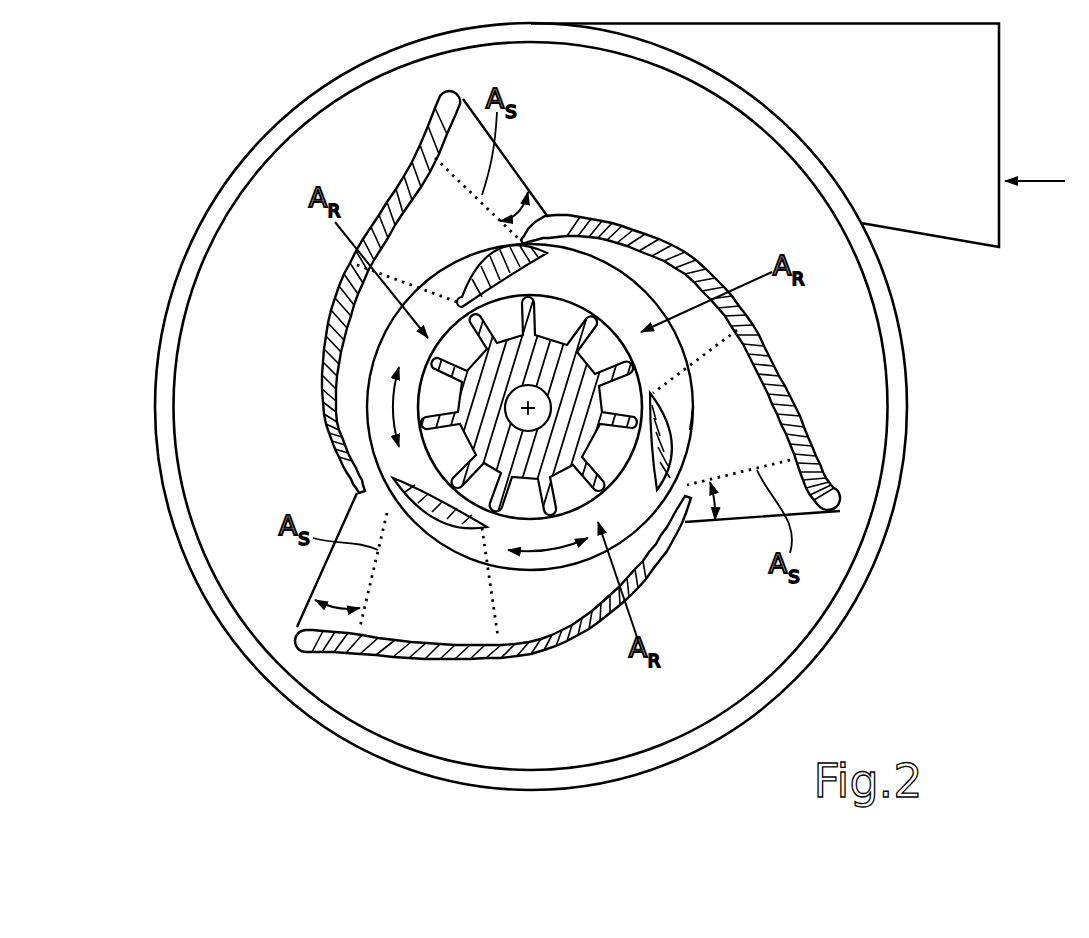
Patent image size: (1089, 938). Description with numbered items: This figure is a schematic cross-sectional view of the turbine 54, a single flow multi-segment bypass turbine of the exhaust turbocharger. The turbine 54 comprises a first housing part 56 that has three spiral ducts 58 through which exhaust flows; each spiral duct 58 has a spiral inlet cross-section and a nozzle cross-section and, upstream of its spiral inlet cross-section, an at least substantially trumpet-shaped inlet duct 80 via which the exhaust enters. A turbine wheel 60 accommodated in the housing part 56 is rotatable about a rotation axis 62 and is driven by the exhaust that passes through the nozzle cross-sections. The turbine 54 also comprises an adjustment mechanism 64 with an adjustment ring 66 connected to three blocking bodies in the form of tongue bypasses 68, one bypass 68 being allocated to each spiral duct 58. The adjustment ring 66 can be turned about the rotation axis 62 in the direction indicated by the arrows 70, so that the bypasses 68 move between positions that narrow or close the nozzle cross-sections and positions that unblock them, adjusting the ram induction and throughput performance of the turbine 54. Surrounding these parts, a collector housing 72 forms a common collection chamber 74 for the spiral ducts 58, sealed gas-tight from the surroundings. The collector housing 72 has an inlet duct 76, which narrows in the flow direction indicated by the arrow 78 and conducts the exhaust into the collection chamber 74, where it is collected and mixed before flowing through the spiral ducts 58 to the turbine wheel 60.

The turbine 54 is at (737, 788).
The first housing part 56 is at (668, 188).
The spiral ducts 58 is at (528, 158).
The turbine wheel 60 is at (626, 328).
The rotation axis 62 is at (543, 392).
The adjustment mechanism 64 is at (440, 588).
The adjustment ring 66 is at (683, 413).
The tongue bypasses 68 is at (490, 275).
The arrows 70 is at (390, 403).
The collector housing 72 is at (306, 100).
The collection chamber 74 is at (234, 308).
The inlet duct 76 is at (1000, 52).
The arrow 78 is at (1040, 181).
The trumpet-shaped inlet duct 80 is at (525, 205).